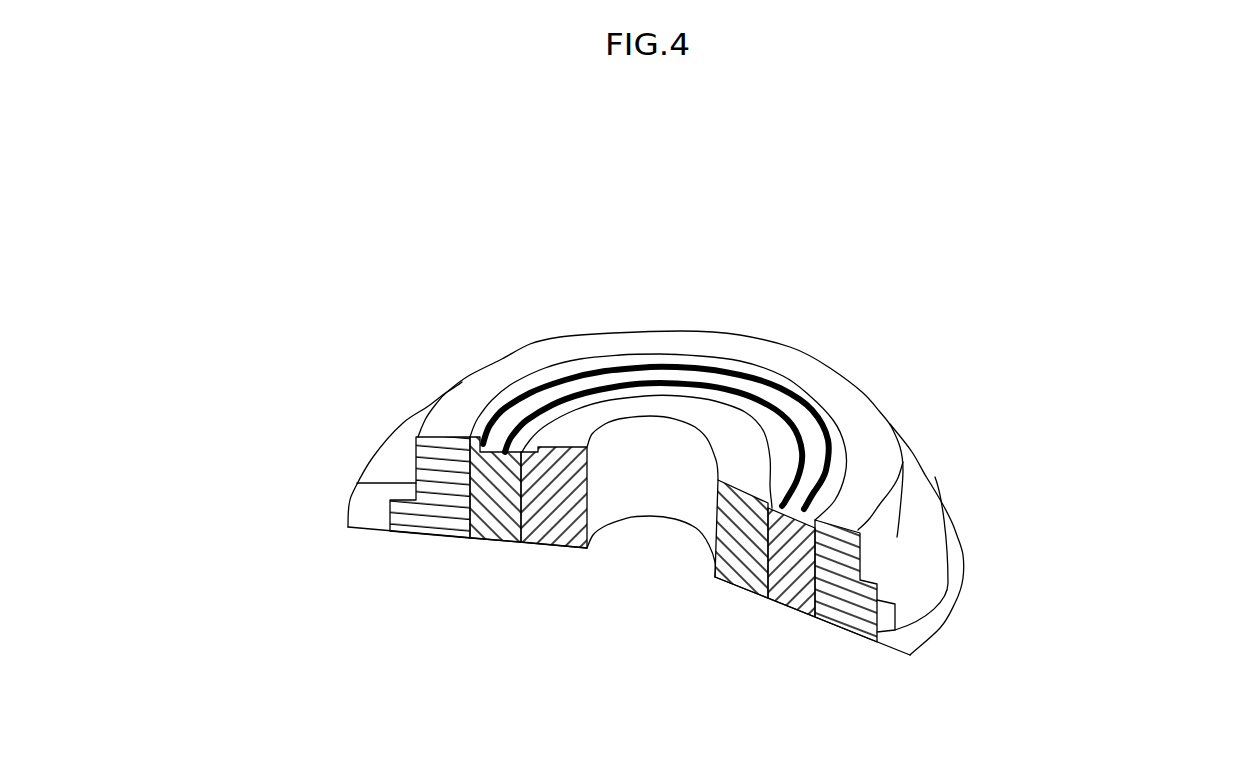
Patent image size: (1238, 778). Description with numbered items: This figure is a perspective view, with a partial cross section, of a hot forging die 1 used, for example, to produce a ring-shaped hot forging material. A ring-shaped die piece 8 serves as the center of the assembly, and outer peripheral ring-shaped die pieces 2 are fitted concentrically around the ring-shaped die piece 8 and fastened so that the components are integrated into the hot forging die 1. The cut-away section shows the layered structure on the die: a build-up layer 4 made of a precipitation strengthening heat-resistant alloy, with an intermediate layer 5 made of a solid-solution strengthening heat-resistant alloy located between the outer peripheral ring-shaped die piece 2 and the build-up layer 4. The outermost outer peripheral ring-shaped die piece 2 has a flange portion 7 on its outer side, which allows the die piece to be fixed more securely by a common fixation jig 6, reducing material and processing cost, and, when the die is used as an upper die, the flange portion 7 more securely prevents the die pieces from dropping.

The hot forging die 1 is at (697, 318).
The outer peripheral ring-shaped die piece 2 is at (797, 523).
The build-up layer 4 is at (515, 400).
The intermediate layer 5 is at (480, 440).
The fixation jig 6 is at (375, 522).
The flange portion 7 is at (905, 585).
The ring-shaped die piece 8 is at (748, 495).